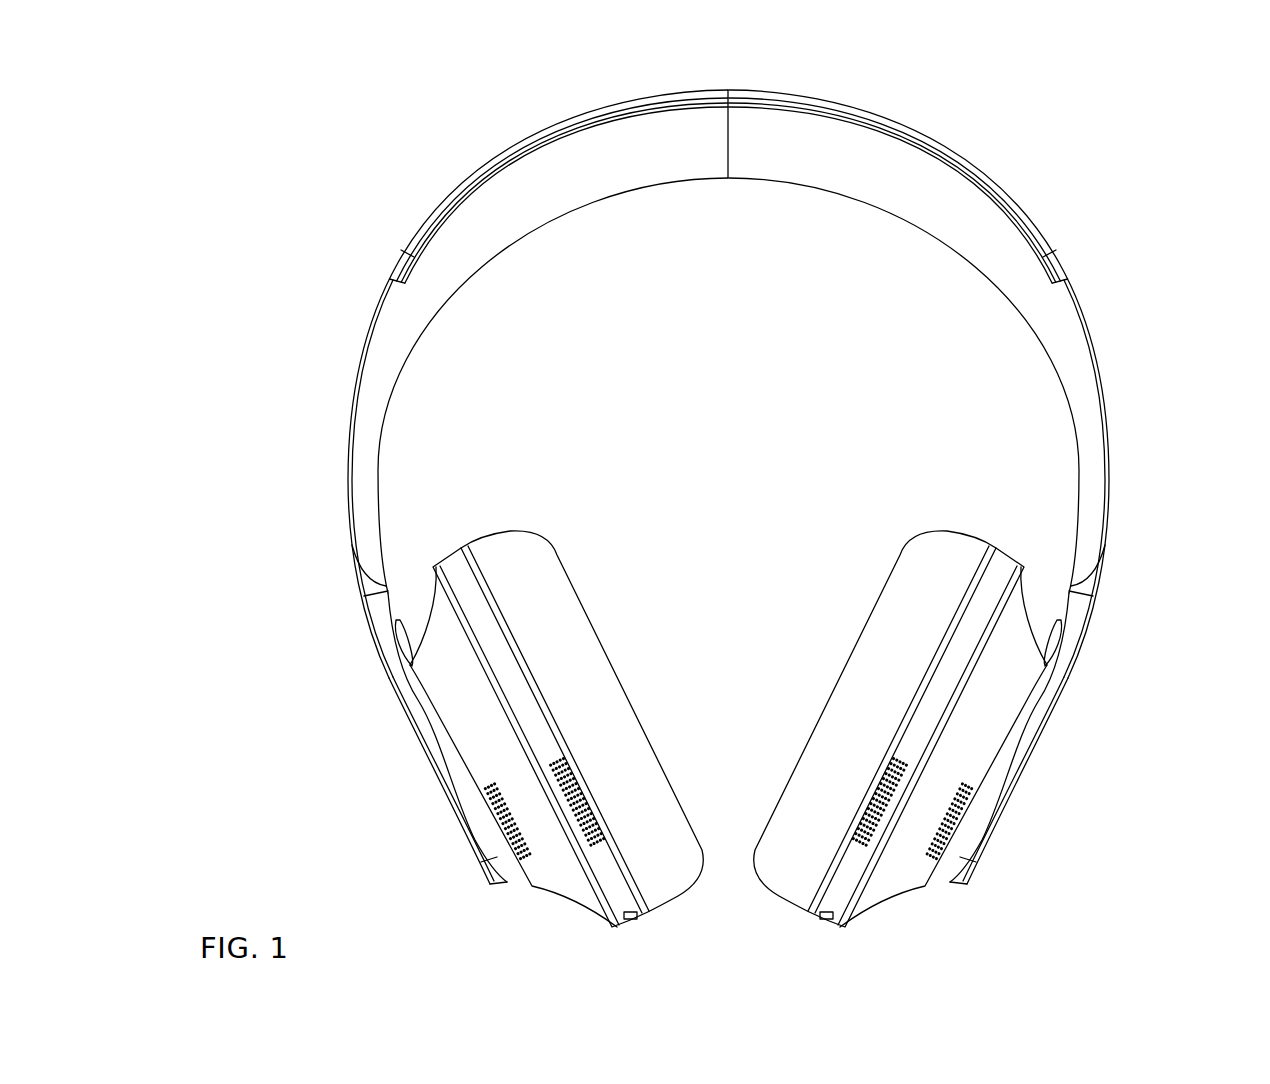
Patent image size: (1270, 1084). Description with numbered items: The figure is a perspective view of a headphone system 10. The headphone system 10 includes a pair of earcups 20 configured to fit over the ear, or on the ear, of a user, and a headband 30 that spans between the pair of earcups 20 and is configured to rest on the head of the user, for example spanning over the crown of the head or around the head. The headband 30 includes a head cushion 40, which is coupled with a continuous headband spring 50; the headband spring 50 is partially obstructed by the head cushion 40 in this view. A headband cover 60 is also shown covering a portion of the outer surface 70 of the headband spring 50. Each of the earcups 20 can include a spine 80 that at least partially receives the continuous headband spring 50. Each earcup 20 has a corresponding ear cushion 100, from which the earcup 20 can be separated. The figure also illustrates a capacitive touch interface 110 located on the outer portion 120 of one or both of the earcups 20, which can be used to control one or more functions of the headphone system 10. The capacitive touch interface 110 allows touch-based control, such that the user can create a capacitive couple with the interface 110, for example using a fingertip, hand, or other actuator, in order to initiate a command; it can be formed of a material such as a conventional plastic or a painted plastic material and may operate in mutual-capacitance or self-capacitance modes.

The headphone system 10 is at (316, 105).
The earcups 20 is at (458, 569).
The headband 30 is at (1103, 243).
The head cushion 40 is at (890, 205).
The continuous headband spring 50 is at (353, 654).
The headband cover 60 is at (945, 148).
The outer surface 70 is at (347, 433).
The spine 80 is at (466, 852).
The ear cushion 100 is at (554, 516).
The capacitive touch interface 110 is at (446, 751).
The outer portion 120 is at (417, 594).